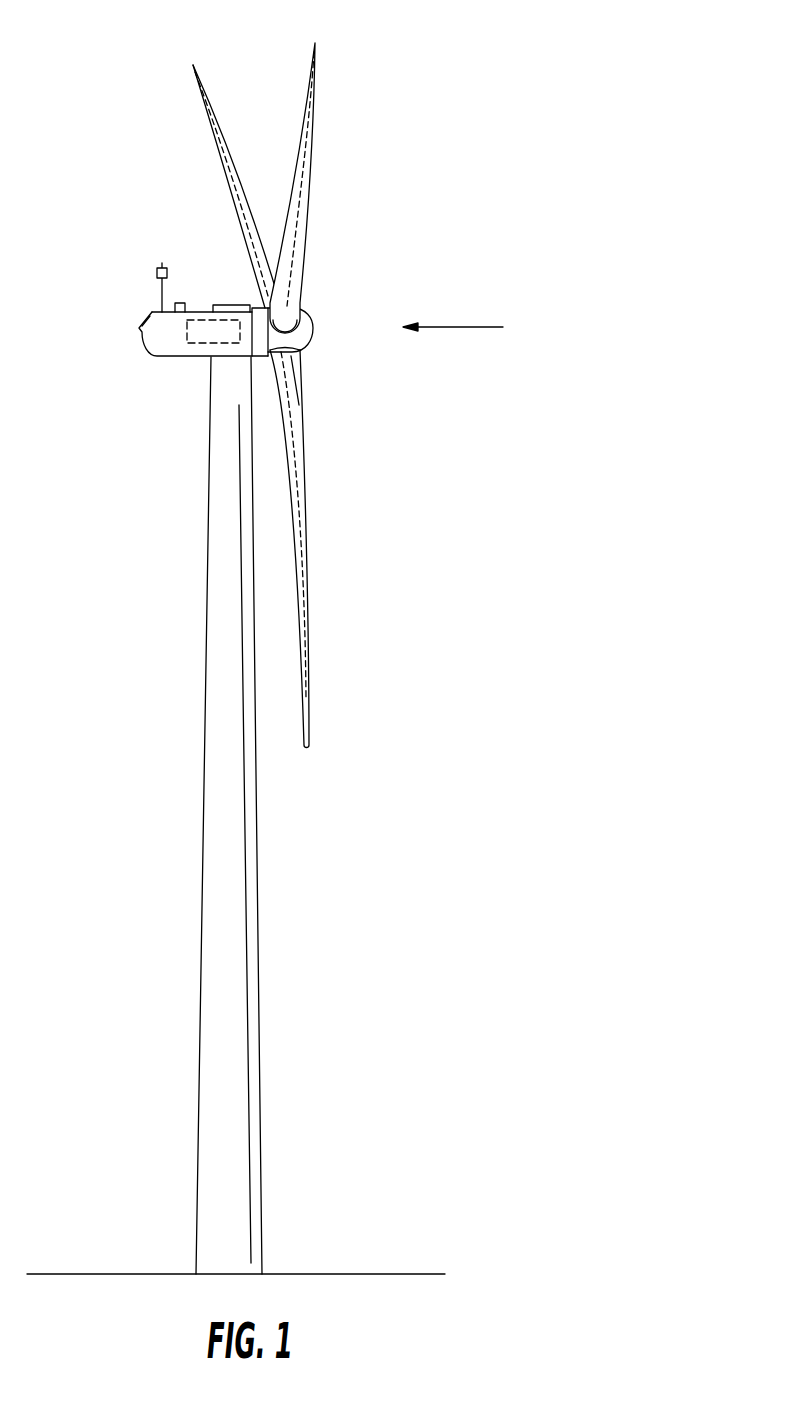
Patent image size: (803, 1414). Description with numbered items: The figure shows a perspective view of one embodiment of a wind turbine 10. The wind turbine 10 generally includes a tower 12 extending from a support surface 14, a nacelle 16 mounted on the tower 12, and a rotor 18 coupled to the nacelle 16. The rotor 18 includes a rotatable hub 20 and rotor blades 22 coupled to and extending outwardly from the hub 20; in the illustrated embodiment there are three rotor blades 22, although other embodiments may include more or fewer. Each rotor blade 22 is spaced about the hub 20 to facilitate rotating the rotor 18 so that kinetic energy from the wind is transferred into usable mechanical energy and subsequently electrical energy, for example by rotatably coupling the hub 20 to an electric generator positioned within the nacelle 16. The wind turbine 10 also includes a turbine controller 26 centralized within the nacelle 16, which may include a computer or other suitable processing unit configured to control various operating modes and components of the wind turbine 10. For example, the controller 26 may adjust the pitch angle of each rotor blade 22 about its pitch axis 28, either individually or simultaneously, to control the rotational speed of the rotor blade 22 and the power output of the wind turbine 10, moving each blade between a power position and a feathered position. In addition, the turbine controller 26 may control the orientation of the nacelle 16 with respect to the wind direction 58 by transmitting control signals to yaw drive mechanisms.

The wind turbine 10 is at (445, 168).
The tower 12 is at (235, 938).
The support surface 14 is at (113, 1272).
The nacelle 16 is at (170, 357).
The rotor 18 is at (318, 305).
The rotatable hub 20 is at (313, 337).
The rotor blade 22 is at (293, 395).
The turbine controller 26 is at (207, 318).
The pitch axis 28 is at (236, 210).
The wind direction 58 is at (457, 327).